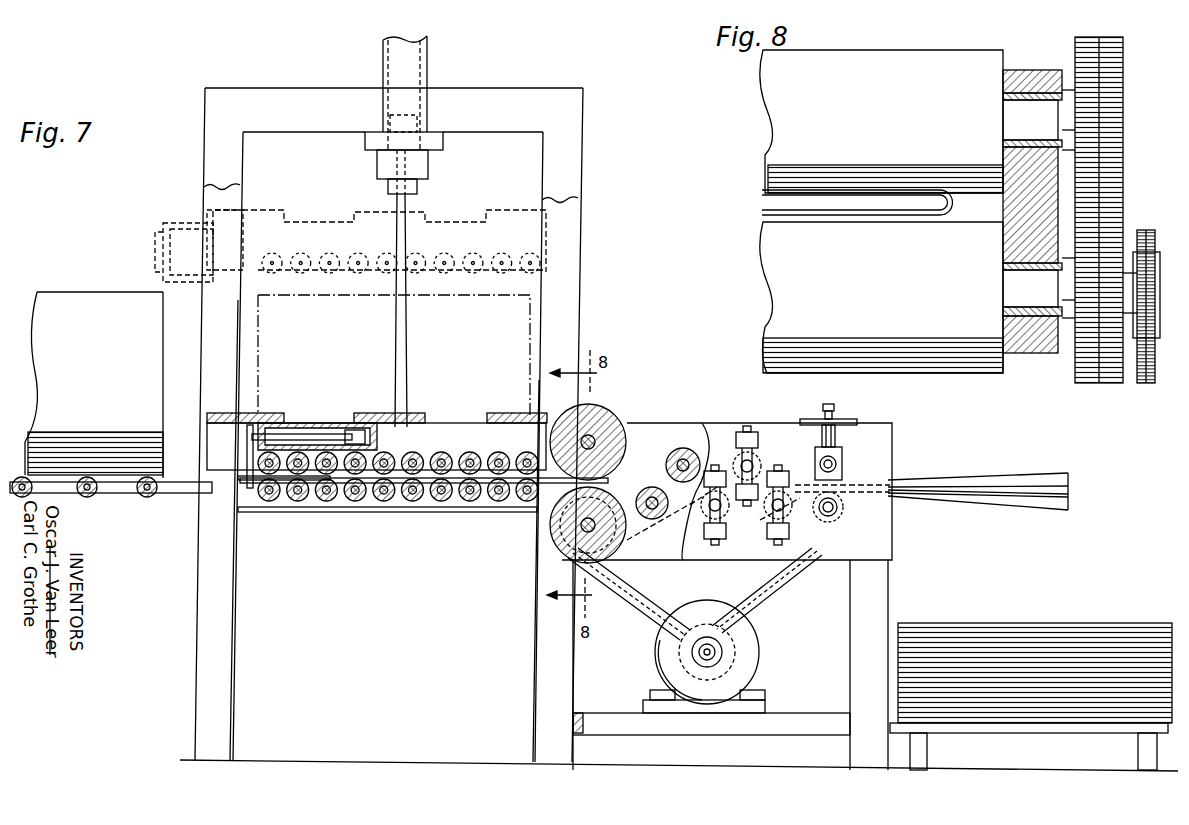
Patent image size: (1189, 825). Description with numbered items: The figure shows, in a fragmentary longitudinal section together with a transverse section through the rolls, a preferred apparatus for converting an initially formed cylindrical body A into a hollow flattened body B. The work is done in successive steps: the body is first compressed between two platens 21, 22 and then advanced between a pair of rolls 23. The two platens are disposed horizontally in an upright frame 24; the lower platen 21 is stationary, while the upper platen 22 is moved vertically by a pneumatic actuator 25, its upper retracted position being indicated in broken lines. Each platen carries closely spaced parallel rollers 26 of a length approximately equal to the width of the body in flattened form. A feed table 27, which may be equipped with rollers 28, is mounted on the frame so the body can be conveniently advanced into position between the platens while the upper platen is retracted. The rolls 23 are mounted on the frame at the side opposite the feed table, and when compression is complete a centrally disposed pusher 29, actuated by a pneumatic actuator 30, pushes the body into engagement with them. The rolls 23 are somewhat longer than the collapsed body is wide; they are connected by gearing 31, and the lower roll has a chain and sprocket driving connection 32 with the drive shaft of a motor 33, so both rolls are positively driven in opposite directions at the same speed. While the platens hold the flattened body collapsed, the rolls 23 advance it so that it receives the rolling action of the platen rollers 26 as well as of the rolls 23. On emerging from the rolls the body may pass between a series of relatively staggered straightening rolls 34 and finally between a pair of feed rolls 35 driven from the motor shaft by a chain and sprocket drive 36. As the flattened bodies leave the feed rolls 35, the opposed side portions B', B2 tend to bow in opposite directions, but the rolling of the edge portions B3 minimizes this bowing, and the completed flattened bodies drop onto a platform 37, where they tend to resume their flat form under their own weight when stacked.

In FIG. 7, the platen 21 is at (410, 512).
In FIG. 7, the platen 22 is at (454, 223).
In FIG. 7, the rolls 23 is at (612, 469).
In FIG. 8, the rolls 23 is at (786, 137).
In FIG. 7, the upright frame 24 is at (205, 185).
In FIG. 7, the pneumatic actuator 25 is at (428, 80).
In FIG. 7, the rollers 26 is at (500, 500).
In FIG. 7, the feed table 27 is at (125, 496).
In FIG. 7, the rollers 28 is at (150, 496).
In FIG. 7, the pusher 29 is at (314, 522).
In FIG. 7, the pneumatic actuator 30 is at (323, 423).
In FIG. 8, the gearing 31 is at (1131, 202).
In FIG. 7, the chain and sprocket driving connection 32 is at (612, 598).
In FIG. 8, the chain and sprocket driving connection 32 is at (1133, 386).
In FIG. 7, the motor 33 is at (658, 660).
In FIG. 7, the straightening rolls 34 is at (684, 484).
In FIG. 7, the feed rolls 35 is at (843, 465).
In FIG. 7, the chain and sprocket drive 36 is at (820, 568).
In FIG. 7, the platform 37 is at (1022, 733).
In FIG. 7, the cylindrical body A is at (52, 294).
In FIG. 7, the hollow flattened body B is at (423, 460).
In FIG. 7, the side portion B' is at (978, 478).
In FIG. 8, the side portion B' is at (837, 183).
In FIG. 7, the side portion B2 is at (1055, 510).
In FIG. 8, the side portion B2 is at (764, 214).
In FIG. 7, the edge portions B3 is at (978, 495).
In FIG. 8, the edge portions B3 is at (948, 199).